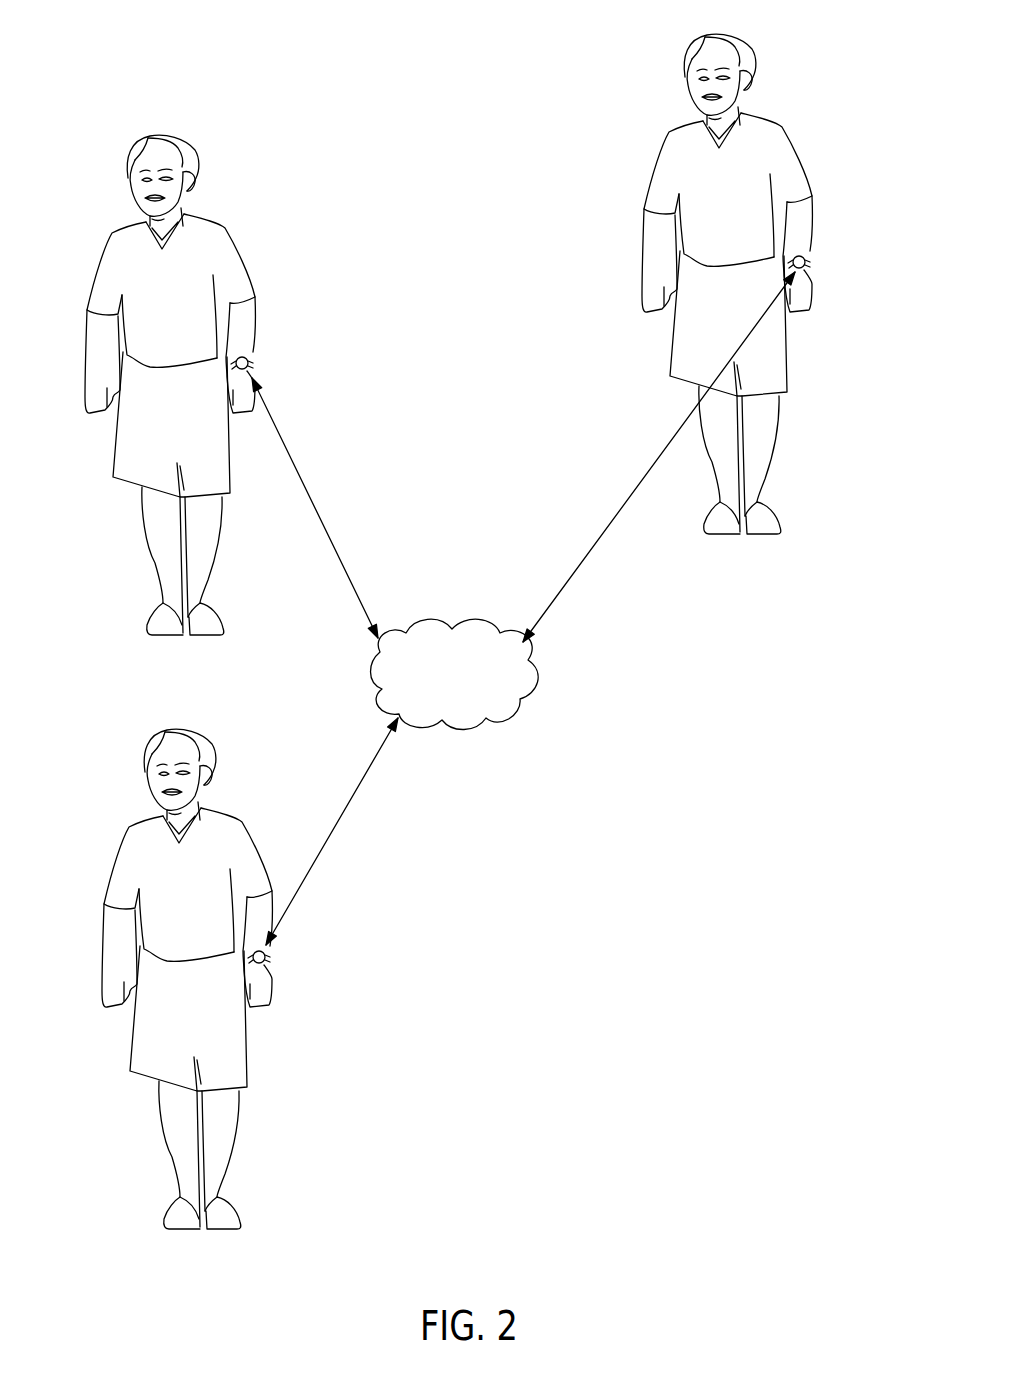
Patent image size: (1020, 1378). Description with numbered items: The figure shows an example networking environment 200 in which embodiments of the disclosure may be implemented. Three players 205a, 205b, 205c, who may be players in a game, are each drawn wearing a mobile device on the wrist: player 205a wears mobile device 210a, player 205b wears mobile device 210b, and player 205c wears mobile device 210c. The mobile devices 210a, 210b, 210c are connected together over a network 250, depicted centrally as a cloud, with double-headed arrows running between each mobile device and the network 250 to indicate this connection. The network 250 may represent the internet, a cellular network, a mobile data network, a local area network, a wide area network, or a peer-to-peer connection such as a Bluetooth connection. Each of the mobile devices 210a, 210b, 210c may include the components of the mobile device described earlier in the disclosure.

The networking environment 200 is at (146, 60).
The player 205a is at (203, 214).
The player 205b is at (760, 113).
The player 205c is at (220, 808).
The mobile device 210a is at (252, 360).
The mobile device 210b is at (809, 259).
The mobile device 210c is at (269, 954).
The network 250 is at (476, 700).